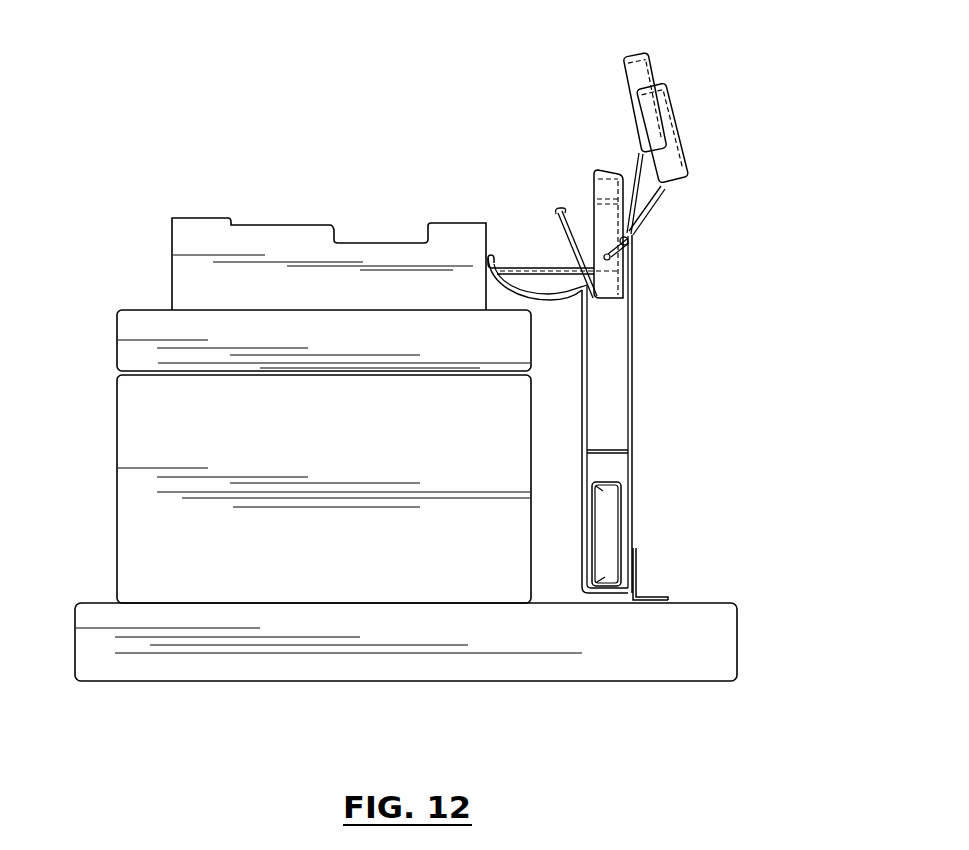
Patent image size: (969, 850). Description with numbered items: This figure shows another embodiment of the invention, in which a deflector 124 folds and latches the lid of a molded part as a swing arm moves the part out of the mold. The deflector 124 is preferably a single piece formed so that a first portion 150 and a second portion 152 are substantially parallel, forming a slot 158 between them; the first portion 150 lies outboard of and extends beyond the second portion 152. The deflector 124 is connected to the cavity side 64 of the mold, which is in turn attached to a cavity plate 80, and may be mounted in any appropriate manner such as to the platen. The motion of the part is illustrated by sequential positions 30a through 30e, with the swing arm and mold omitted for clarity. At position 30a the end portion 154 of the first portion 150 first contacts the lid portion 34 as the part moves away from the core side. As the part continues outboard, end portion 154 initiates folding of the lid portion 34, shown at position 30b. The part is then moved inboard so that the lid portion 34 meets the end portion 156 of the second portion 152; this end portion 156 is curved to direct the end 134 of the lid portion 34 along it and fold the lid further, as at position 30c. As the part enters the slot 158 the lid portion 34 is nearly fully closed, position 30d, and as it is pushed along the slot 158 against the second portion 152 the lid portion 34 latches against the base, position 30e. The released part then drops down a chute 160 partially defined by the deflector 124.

The first position of part 30a is at (655, 62).
The second position of part 30b is at (689, 145).
The third position of part 30c is at (594, 171).
The fourth position of part 30d is at (628, 310).
The fifth position of part 30e is at (623, 525).
The lid portion 34 is at (637, 166).
The cavity side 64 is at (196, 218).
The cavity plate 80 is at (117, 339).
The deflector 124 is at (668, 386).
The end of lid portion 134 is at (502, 267).
The first portion 150 is at (634, 284).
The second portion 152 is at (582, 386).
The end portion 154 is at (637, 240).
The end portion 156 is at (551, 299).
The slot 158 is at (617, 413).
The chute 160 is at (617, 468).